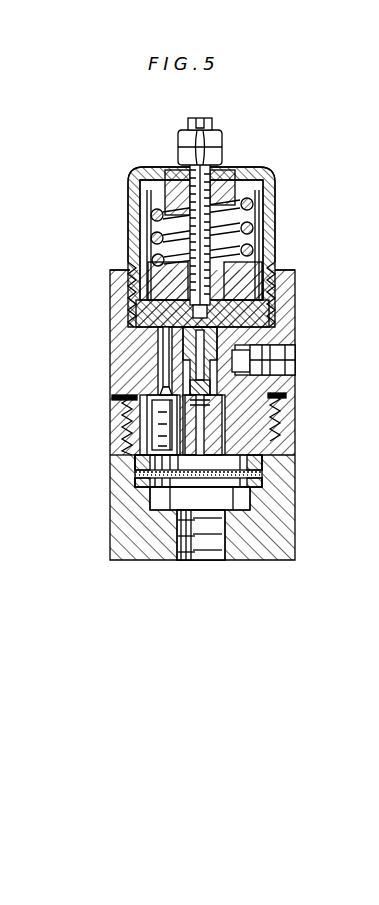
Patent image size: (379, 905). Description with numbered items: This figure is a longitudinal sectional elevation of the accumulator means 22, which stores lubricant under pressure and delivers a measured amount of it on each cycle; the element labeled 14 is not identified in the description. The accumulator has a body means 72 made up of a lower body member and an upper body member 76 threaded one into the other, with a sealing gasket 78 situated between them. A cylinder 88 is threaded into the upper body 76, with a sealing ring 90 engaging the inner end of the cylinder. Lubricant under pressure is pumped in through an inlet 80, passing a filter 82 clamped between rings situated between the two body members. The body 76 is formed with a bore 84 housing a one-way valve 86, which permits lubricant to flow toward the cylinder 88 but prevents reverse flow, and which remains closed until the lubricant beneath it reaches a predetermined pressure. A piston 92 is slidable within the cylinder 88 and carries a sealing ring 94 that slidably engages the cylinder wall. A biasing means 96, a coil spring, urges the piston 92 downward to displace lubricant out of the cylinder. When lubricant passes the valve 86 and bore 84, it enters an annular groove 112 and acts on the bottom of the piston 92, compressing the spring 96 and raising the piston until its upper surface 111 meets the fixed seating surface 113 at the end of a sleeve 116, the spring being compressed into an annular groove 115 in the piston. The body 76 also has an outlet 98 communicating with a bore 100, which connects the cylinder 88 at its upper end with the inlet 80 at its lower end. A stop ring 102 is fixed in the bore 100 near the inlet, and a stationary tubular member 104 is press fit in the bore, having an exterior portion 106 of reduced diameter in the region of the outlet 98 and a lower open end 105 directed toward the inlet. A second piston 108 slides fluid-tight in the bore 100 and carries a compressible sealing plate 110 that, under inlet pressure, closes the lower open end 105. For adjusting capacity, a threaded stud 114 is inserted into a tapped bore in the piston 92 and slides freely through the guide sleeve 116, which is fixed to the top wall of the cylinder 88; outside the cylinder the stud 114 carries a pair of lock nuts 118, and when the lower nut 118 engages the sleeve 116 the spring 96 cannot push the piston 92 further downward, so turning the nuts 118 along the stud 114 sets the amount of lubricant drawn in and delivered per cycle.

The housing lower body 14 is at (280, 512).
The accumulator means 22 is at (292, 200).
The body means 72 is at (106, 514).
The upper body member 76 is at (290, 328).
The sealing gasket 78 is at (298, 392).
The inlet 80 is at (202, 556).
The filter 82 is at (133, 467).
The bore 84 is at (130, 360).
The one-way valve 86 is at (140, 402).
The cylinder 88 is at (130, 210).
The sealing ring 90 is at (286, 310).
The piston 92 is at (290, 272).
The sealing ring 94 is at (126, 308).
The biasing means 96 is at (268, 180).
The outlet 98 is at (300, 356).
The bore 100 is at (298, 375).
The stop ring 102 is at (290, 436).
The tubular member 104 is at (288, 347).
The lower open end 105 is at (140, 382).
The exterior portion of reduced diameter 106 is at (162, 388).
The second piston 108 is at (300, 424).
The sealing plate 110 is at (290, 405).
The upper surface 111 is at (128, 245).
The annular groove 112 is at (130, 337).
The seating surface 113 is at (262, 215).
The threaded stud 114 is at (218, 166).
The annular groove 115 is at (258, 248).
The sleeve 116 is at (182, 166).
The lock nuts 118 is at (186, 129).